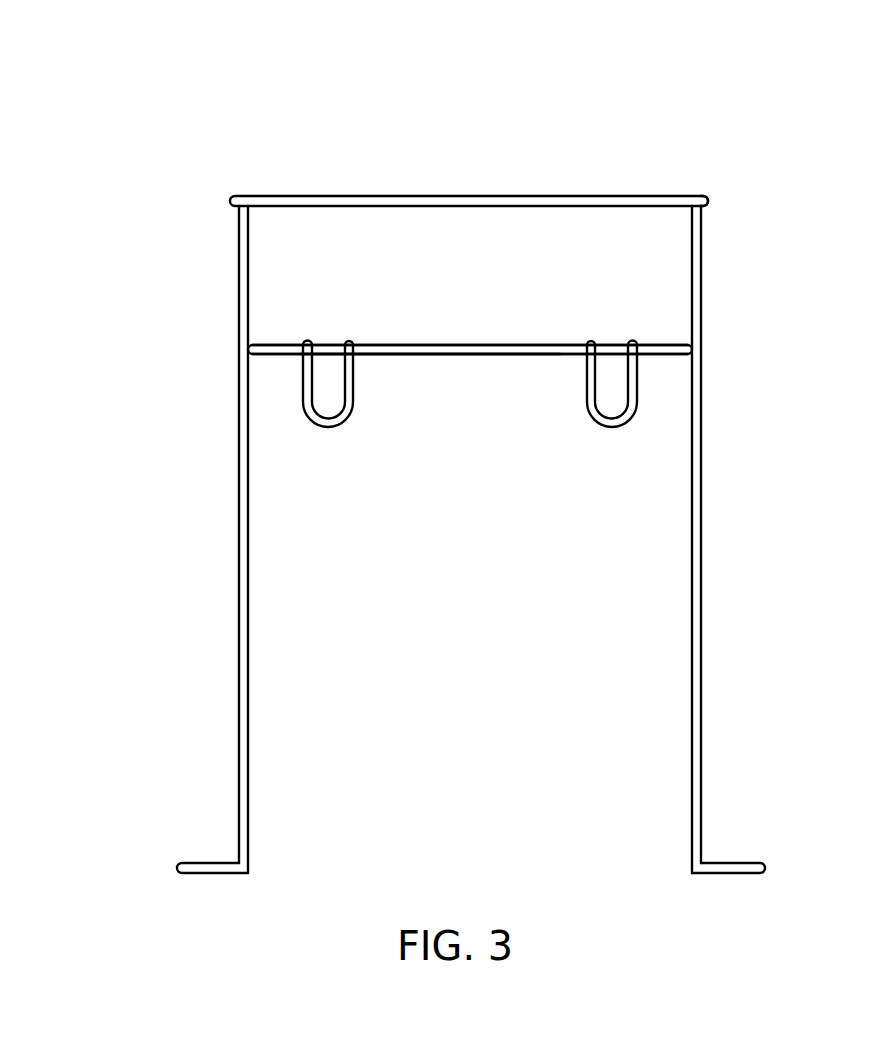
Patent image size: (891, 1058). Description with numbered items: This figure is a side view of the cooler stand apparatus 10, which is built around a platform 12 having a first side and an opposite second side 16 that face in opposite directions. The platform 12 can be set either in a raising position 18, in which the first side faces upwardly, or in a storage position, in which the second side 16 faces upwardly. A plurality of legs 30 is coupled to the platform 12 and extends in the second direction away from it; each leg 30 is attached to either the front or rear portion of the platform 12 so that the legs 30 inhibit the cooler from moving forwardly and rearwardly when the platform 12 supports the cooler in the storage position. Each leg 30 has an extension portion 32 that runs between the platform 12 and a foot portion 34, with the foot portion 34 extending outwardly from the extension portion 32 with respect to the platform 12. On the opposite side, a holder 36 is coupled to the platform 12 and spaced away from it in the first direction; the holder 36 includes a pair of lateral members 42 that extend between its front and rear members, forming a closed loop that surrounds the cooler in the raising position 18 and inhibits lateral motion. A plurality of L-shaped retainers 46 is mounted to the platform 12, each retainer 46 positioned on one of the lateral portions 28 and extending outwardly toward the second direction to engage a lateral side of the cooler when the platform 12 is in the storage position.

The cooler stand apparatus 10 is at (620, 147).
The platform 12 is at (434, 345).
The second side 16 is at (402, 356).
The raising position 18 is at (650, 330).
The lateral portions 28 is at (550, 345).
The legs 30 is at (202, 695).
The extension portion 32 is at (248, 743).
The foot portion 34 is at (210, 873).
The holder 36 is at (713, 193).
The lateral members 42 is at (330, 196).
The retainers 46 is at (325, 423).